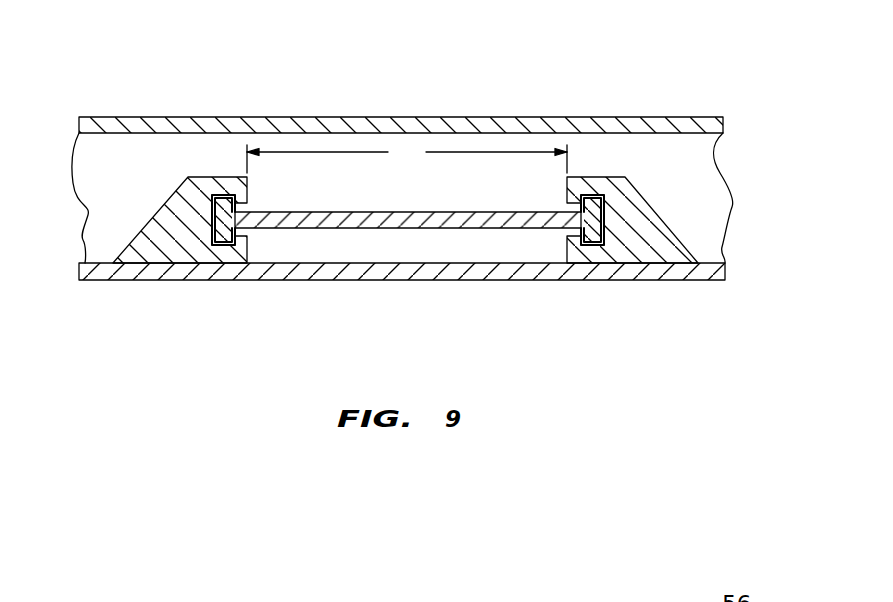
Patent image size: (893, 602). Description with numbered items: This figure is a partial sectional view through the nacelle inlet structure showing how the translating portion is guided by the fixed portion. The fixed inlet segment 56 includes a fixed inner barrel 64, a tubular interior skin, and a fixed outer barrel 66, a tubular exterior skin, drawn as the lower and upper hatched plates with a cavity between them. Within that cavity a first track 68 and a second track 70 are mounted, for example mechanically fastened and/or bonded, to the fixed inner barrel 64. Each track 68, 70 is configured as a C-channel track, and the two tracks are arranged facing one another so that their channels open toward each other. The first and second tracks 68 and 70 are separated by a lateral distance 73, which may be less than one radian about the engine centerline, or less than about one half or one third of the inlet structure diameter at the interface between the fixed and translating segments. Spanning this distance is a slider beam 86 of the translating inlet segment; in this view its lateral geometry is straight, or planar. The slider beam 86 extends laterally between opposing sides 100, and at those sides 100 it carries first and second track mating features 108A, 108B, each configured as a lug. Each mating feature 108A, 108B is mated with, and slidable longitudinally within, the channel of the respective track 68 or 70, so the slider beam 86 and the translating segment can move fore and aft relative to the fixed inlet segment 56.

The fixed inlet segment 56 is at (706, 75).
The fixed inner barrel 64 is at (543, 281).
The fixed outer barrel 66 is at (583, 117).
The first track 68 is at (185, 200).
The second track 70 is at (632, 198).
The lateral distance 73 is at (407, 156).
The slider beam 86 is at (293, 241).
The opposing sides 100 is at (212, 236).
The first track mating feature 108A is at (227, 257).
The second track mating feature 108B is at (587, 257).